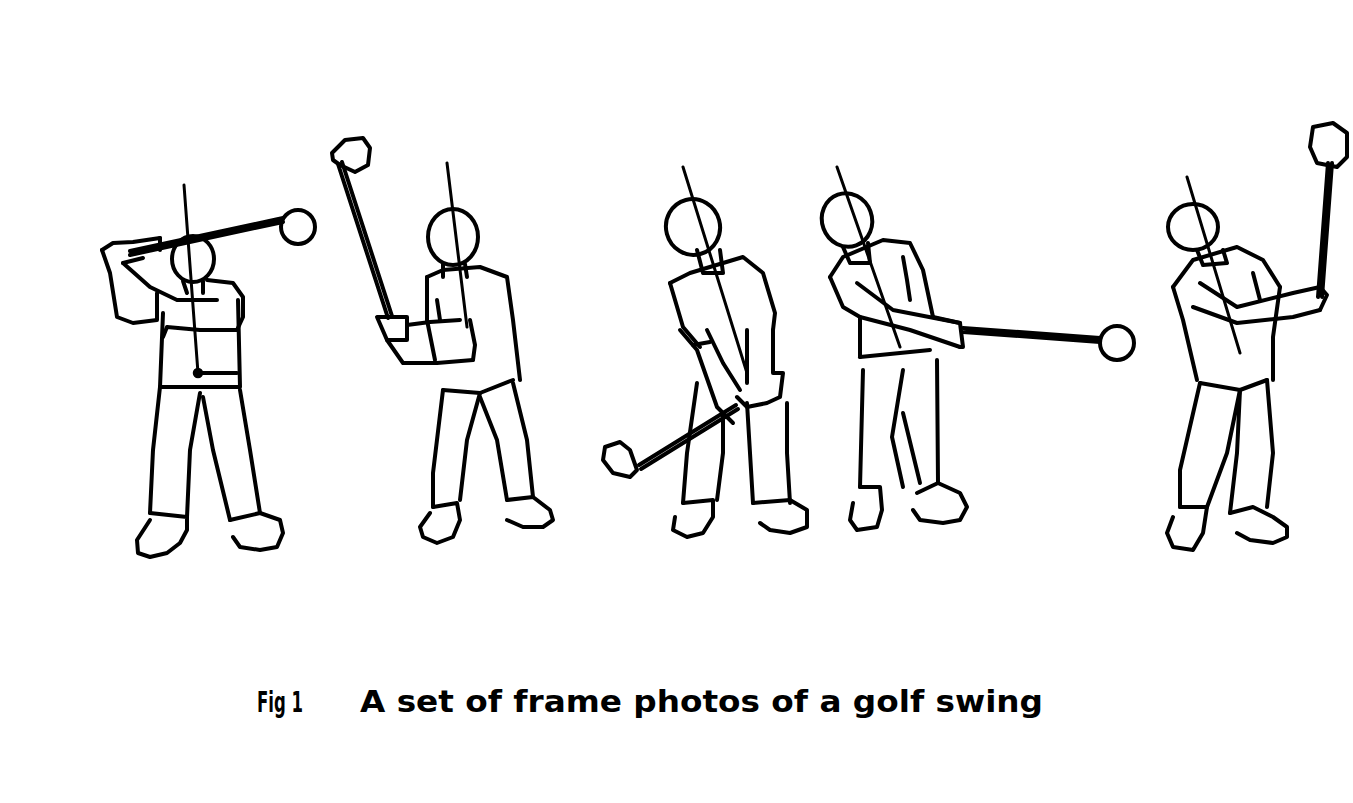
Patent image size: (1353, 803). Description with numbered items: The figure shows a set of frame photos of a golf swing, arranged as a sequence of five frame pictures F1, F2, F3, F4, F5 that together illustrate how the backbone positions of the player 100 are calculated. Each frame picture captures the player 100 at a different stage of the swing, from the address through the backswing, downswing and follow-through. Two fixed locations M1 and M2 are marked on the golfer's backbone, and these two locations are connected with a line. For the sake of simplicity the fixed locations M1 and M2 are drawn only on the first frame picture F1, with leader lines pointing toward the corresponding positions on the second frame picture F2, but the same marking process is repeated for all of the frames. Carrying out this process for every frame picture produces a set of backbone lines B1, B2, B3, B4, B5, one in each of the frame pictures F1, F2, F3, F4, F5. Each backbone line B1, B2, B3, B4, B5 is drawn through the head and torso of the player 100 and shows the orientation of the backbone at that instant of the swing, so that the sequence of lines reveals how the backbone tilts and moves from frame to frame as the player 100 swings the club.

The player 100 is at (150, 155).
The frame picture F1 is at (210, 557).
The frame picture F2 is at (480, 540).
The frame picture F3 is at (740, 547).
The frame picture F4 is at (907, 550).
The frame picture F5 is at (1220, 560).
The backbone line B1 is at (187, 200).
The backbone line B2 is at (453, 190).
The backbone line B3 is at (693, 197).
The backbone line B4 is at (847, 190).
The backbone line B5 is at (1193, 200).
The fixed location M1 is at (403, 287).
The fixed location M2 is at (203, 375).